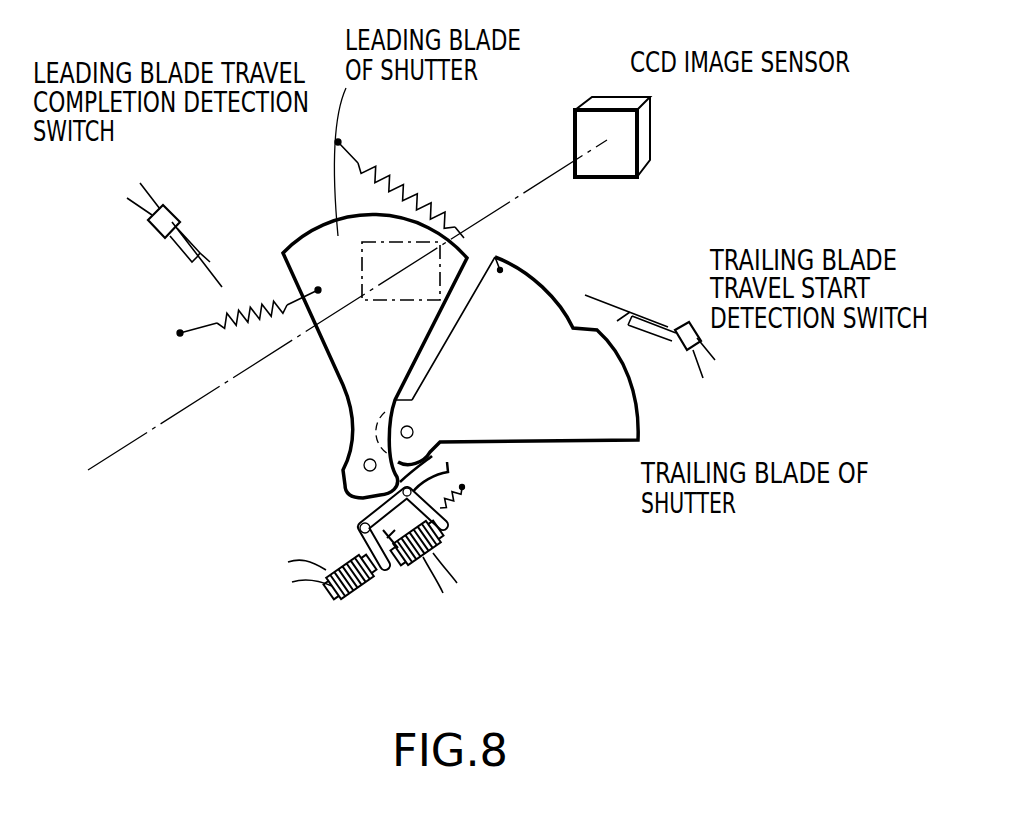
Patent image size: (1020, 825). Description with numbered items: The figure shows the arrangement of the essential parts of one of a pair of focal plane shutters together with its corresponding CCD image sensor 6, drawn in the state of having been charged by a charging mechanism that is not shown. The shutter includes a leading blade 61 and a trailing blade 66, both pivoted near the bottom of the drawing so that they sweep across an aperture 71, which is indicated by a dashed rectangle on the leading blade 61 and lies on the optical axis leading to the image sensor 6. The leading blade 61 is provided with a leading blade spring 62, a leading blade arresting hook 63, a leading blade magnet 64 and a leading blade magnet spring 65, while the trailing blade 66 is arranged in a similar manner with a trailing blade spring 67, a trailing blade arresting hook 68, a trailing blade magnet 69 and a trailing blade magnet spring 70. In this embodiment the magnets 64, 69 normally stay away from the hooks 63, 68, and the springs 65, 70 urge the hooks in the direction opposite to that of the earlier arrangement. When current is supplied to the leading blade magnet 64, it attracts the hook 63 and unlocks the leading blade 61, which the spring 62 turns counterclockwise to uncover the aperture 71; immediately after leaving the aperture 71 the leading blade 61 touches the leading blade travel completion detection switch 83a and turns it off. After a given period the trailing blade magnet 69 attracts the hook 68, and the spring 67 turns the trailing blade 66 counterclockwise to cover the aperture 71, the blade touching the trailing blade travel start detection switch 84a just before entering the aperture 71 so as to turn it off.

The CCD image sensor 6 is at (613, 97).
The leading blade 61 is at (306, 236).
The leading blade spring 62 is at (254, 306).
The leading blade arresting hook 63 is at (372, 505).
The leading blade magnet 64 is at (360, 594).
The leading blade magnet spring 65 is at (393, 556).
The trailing blade 66 is at (612, 440).
The trailing blade spring 67 is at (413, 196).
The trailing blade arresting hook 68 is at (446, 463).
The trailing blade magnet 69 is at (437, 548).
The trailing blade magnet spring 70 is at (460, 500).
The aperture 71 is at (386, 302).
The leading blade travel completion detection switch 83a is at (170, 210).
The trailing blade travel start detection switch 84a is at (688, 326).